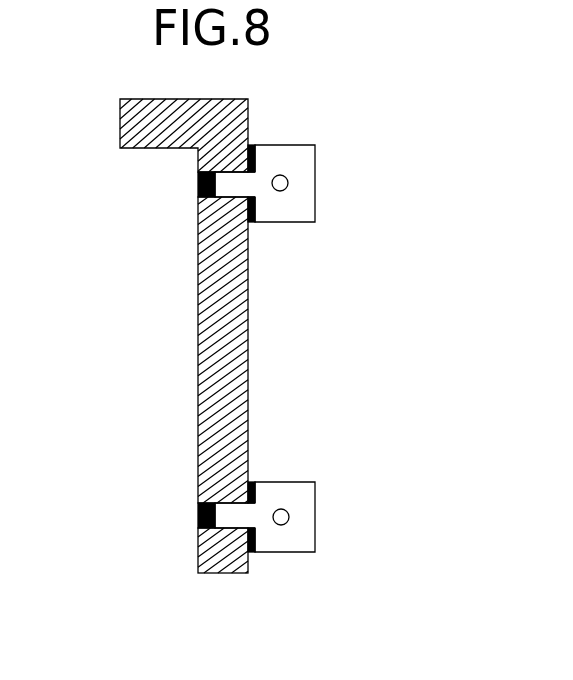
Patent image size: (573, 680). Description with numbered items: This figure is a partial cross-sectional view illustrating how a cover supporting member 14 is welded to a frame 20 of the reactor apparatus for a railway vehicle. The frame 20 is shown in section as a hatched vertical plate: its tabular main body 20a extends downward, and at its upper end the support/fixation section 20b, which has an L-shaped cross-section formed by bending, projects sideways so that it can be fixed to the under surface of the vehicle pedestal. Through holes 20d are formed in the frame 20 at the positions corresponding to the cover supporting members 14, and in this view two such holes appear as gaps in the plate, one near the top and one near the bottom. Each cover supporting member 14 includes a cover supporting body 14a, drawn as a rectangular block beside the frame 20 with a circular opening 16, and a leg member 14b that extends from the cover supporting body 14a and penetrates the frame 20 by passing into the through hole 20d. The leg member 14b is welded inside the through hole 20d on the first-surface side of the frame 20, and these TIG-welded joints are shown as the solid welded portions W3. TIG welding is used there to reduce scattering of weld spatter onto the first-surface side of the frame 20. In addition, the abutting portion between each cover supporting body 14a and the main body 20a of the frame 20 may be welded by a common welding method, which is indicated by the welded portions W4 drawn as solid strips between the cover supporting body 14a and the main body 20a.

The cover supporting member 14 is at (226, 349).
The cover supporting body 14a is at (305, 160).
The leg member 14b is at (225, 180).
The hole 16 is at (281, 192).
The frame 20 is at (190, 336).
The main body 20a is at (248, 325).
The support/fixation section 20b is at (120, 122).
The through hole 20d is at (233, 190).
The welded portion W3 is at (197, 190).
The welded portion W4 is at (251, 222).